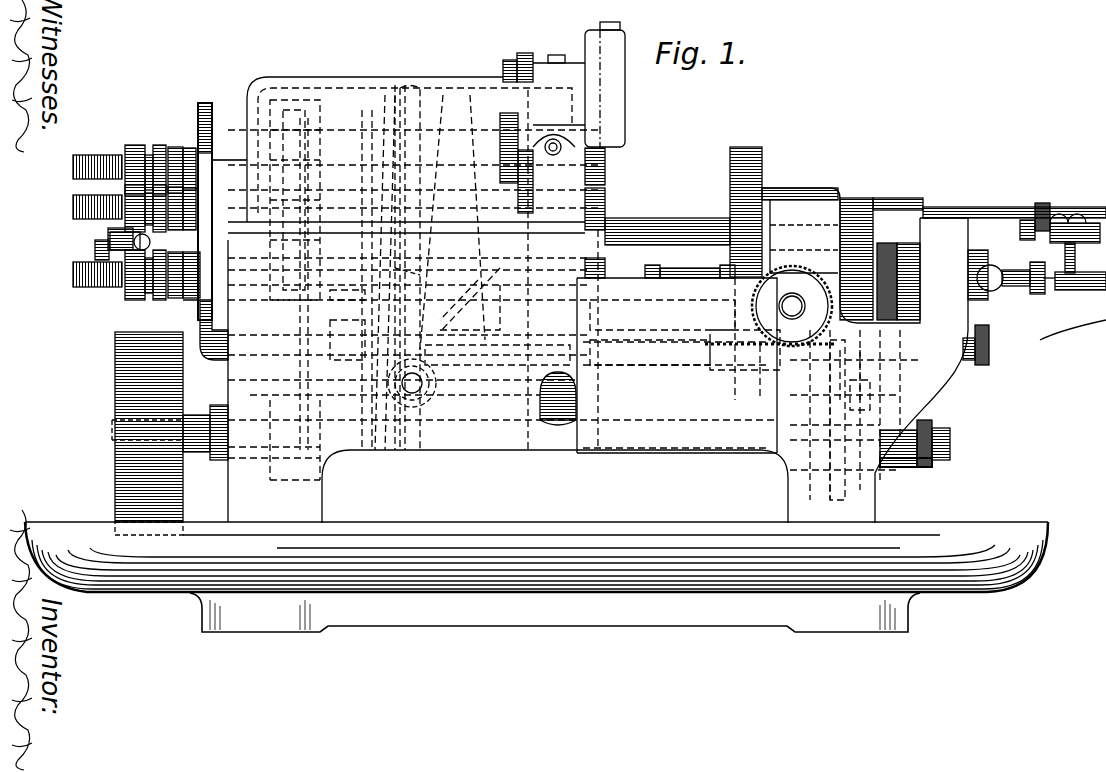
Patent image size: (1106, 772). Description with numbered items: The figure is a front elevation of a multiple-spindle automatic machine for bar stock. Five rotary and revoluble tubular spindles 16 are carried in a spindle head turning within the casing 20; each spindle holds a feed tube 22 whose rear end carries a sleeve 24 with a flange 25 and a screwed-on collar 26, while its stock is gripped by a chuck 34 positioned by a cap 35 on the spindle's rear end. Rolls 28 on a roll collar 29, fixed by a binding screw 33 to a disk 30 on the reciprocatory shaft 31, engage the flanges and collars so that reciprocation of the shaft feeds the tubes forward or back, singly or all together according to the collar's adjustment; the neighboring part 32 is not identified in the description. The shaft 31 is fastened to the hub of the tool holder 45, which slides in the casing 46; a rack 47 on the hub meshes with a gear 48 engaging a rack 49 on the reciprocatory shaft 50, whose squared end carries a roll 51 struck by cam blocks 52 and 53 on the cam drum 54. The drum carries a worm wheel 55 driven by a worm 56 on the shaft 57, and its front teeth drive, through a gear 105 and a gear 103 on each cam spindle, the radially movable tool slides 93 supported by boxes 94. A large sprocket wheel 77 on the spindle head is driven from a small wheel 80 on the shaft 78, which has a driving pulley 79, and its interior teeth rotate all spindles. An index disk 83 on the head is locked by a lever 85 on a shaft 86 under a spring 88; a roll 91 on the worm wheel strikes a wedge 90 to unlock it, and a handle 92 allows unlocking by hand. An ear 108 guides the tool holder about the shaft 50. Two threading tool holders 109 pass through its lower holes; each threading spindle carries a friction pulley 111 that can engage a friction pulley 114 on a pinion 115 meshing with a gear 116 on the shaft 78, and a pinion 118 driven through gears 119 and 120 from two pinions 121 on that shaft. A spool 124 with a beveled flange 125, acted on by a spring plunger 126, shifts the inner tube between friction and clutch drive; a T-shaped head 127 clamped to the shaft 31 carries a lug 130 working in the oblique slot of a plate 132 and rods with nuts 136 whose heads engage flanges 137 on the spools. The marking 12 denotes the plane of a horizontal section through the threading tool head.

The spindle 12 is at (1014, 201).
The tubular spindle 16 is at (608, 162).
The casing 20 is at (590, 293).
The feed tube 22 is at (72, 166).
The sleeve 24 is at (72, 180).
The flange 25 is at (160, 148).
The collar 26 is at (135, 148).
The rolls 28 is at (150, 146).
The roll collar 29 is at (94, 252).
The disk 30 is at (110, 236).
The reciprocatory shaft 31 is at (668, 222).
The hand knob 32 is at (122, 150).
The binding screw 33 is at (100, 244).
The chuck 34 is at (608, 182).
The cap 35 is at (187, 146).
The tool holder 45 is at (764, 160).
The casing 46 is at (884, 198).
The rack 47 is at (810, 268).
The gear 48 is at (818, 346).
The rack 49 is at (742, 352).
The reciprocatory shaft 50 is at (652, 362).
The roll 51 is at (440, 348).
The cam block 52 is at (456, 296).
The cam block 53 is at (470, 307).
The cam drum 54 is at (504, 128).
The worm wheel 55 is at (410, 90).
The worm 56 is at (402, 400).
The shaft 57 is at (413, 396).
The large gear or sprocket wheel 77 is at (292, 97).
The shaft 78 is at (514, 430).
The driving pulley 79 is at (147, 433).
The small gear or sprocket wheel 80 is at (326, 462).
The index disk 83 is at (206, 102).
The lever 85 is at (182, 326).
The shaft 86 is at (330, 400).
The spring 88 is at (352, 332).
The wedge 90 is at (396, 268).
The roll 91 is at (400, 212).
The handle 92 is at (213, 170).
The slides 93 is at (620, 26).
The boxes 94 is at (605, 88).
The gear 103 is at (530, 44).
The gear 105 is at (504, 60).
The ear 108 is at (728, 322).
The threading tool holders 109 is at (688, 278).
The friction pulley 111 is at (866, 224).
The friction pulley 114 is at (858, 391).
The pinion 115 is at (832, 365).
The gear 116 is at (834, 476).
The pinion 118 is at (900, 236).
The gear 119 is at (890, 386).
The gear 120 is at (912, 404).
The pinions 121 is at (906, 468).
The spool 124 is at (1020, 298).
The beveled flange 125 is at (988, 330).
The spring plunger 126 is at (990, 292).
The T-shaped head 127 is at (1075, 214).
The lug 130 is at (1045, 202).
The plate 132 is at (1032, 218).
The threaded nuts 136 is at (1068, 286).
The flanges 137 is at (1066, 332).